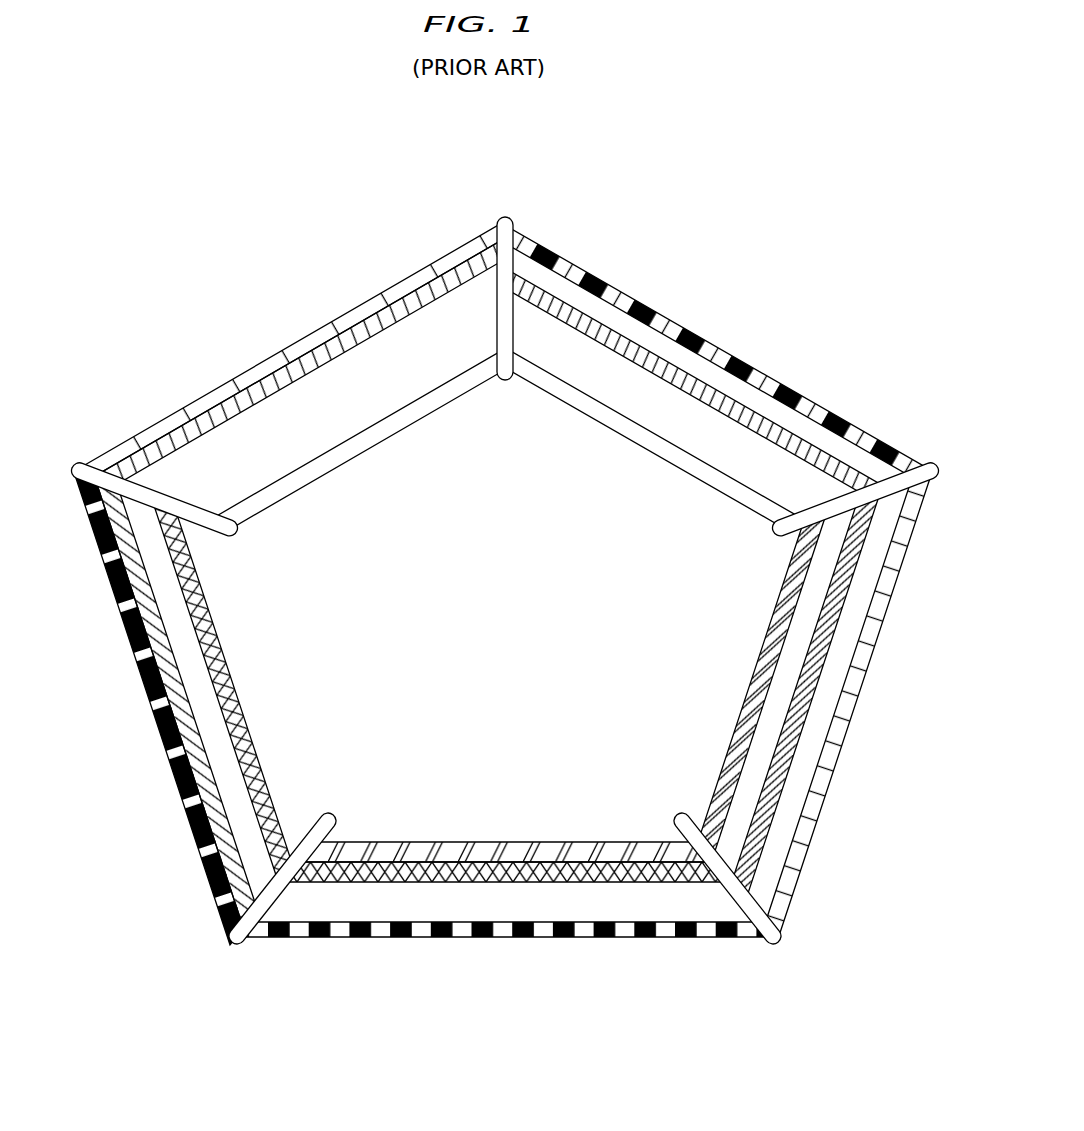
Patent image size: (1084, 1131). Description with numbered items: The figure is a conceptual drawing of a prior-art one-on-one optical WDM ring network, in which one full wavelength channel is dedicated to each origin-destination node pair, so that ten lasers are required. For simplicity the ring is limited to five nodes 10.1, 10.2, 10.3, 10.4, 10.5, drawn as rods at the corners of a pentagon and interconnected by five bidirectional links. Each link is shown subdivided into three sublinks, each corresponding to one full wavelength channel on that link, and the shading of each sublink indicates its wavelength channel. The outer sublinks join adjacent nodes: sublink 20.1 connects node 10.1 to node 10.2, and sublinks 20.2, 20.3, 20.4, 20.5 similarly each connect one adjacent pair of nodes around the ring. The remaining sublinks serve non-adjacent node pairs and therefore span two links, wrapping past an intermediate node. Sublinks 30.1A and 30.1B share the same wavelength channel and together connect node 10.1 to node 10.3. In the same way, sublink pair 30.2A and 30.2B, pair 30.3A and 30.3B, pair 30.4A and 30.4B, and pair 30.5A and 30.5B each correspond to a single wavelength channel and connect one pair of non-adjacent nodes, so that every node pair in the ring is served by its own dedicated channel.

The node 10.1 is at (505, 214).
The node 10.2 is at (938, 466).
The node 10.3 is at (772, 942).
The node 10.4 is at (238, 942).
The node 10.5 is at (72, 464).
The sublink 20.1 is at (626, 295).
The sublink 20.2 is at (852, 712).
The sublink 20.3 is at (430, 938).
The sublink 20.4 is at (162, 733).
The sublink 20.5 is at (292, 350).
The sublink 30.1A is at (683, 378).
The sublink 30.1B is at (810, 642).
The sublink 30.2A is at (738, 728).
The sublink 30.2B is at (637, 842).
The sublink 30.3A is at (495, 883).
The sublink 30.3B is at (252, 733).
The sublink 30.4A is at (170, 640).
The sublink 30.4B is at (236, 422).
The sublink 30.5A is at (400, 427).
The sublink 30.5B is at (712, 483).